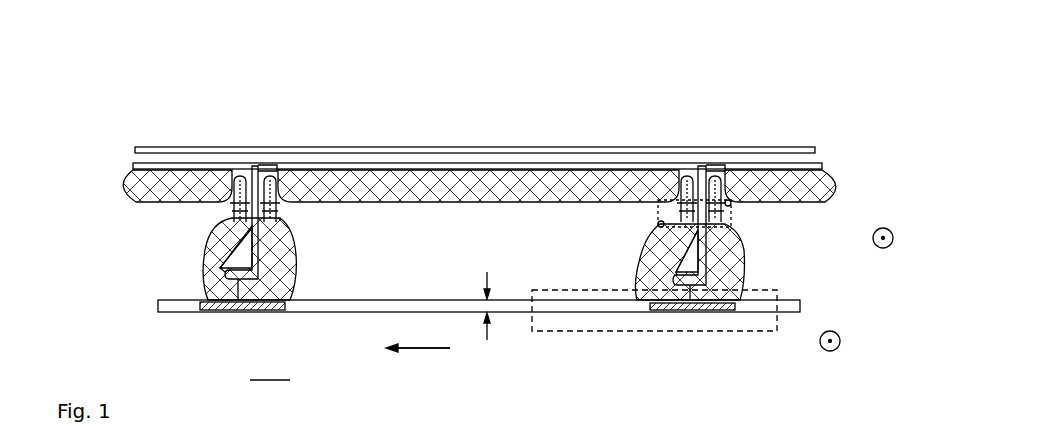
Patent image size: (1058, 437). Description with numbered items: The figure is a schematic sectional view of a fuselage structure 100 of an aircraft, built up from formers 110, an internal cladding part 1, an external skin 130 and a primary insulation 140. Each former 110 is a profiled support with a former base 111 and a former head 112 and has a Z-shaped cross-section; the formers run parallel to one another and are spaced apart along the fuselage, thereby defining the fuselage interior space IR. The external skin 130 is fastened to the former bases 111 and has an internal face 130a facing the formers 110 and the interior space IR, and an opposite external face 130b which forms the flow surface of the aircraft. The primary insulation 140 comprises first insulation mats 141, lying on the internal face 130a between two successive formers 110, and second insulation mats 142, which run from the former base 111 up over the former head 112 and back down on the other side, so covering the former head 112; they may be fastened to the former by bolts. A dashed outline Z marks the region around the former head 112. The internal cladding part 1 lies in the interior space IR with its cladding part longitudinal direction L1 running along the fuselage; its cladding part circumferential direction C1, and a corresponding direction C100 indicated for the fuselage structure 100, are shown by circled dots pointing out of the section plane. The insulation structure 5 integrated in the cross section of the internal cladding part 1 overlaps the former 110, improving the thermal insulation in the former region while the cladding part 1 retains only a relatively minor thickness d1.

The fuselage structure 100 is at (743, 108).
The primary insulation 140 is at (153, 231).
The external skin 130 is at (365, 152).
The internal face 130a is at (452, 167).
The external face 130b is at (611, 152).
The first insulation mats 141 is at (172, 185).
The former base 111 is at (265, 172).
The formers 110 is at (258, 250).
The second insulation mats 142 is at (292, 272).
The former head 112 is at (238, 300).
The internal cladding part 1 is at (802, 306).
The insulation structure 5 is at (288, 308).
The region Z is at (768, 334).
The thickness d1 is at (490, 276).
The cladding part longitudinal direction L1 is at (413, 348).
The fuselage interior space IR is at (270, 365).
The transverse direction of device C100 is at (892, 247).
The cladding part circumferential direction C1 is at (840, 343).